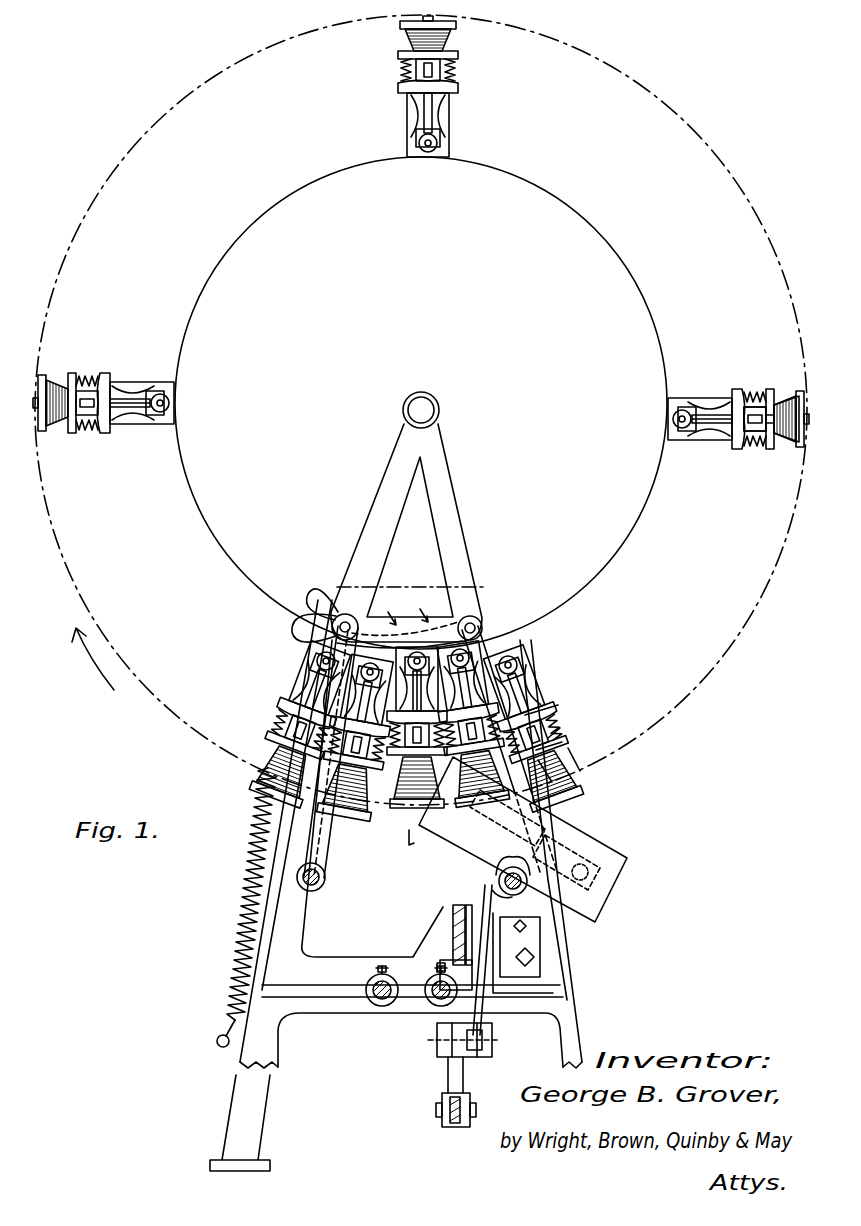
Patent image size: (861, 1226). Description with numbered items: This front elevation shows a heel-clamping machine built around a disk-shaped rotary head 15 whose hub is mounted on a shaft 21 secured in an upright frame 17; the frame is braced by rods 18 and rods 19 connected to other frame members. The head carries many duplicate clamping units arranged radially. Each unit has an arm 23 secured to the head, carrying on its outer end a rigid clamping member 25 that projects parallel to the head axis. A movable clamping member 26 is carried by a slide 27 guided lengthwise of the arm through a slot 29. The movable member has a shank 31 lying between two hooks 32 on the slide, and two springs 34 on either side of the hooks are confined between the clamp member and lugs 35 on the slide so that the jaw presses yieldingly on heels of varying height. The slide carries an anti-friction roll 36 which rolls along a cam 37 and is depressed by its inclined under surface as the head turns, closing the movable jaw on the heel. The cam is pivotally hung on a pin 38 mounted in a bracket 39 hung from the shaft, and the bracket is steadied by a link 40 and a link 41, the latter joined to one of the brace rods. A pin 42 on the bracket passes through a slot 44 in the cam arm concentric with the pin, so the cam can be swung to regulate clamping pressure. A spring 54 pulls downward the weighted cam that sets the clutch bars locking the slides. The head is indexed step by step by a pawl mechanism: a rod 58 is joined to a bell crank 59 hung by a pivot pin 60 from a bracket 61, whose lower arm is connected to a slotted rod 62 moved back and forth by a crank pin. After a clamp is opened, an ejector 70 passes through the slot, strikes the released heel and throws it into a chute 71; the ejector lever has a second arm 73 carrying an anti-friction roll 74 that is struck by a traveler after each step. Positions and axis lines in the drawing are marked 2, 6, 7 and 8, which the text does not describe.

The arrow indicating position 2 is at (387, 606).
The arrow indicating position 6 is at (413, 727).
The spindle unit 7 is at (362, 800).
The axis line 8 is at (338, 587).
The rotary head 15 is at (630, 278).
The upright frame 17 is at (556, 970).
The brace rods 18 is at (325, 888).
The brace rods 19 is at (376, 1002).
The shaft 21 is at (440, 409).
The arm 23 is at (143, 420).
The rigid clamping member 25 is at (798, 448).
The movable clamping member 26 is at (552, 756).
The slide 27 is at (136, 398).
The slot 29 is at (408, 798).
The shank 31 is at (748, 432).
The hooks 32 is at (768, 440).
The springs 34 is at (452, 70).
The lugs 35 is at (540, 718).
The anti-friction roll 36 is at (428, 152).
The cam 37 is at (392, 655).
The pin 38 is at (482, 628).
The bracket 39 is at (466, 537).
The link 40 is at (570, 822).
The link 41 is at (320, 808).
The pin 42 is at (341, 614).
The slot 44 is at (320, 618).
The spring 54 is at (237, 960).
The rod 58 is at (490, 1005).
The bell crank 59 is at (450, 1080).
The pivot pin 60 is at (440, 1052).
The bracket 61 is at (486, 1044).
The rod 62 is at (452, 1128).
The ejector 70 is at (498, 883).
The chute 71 is at (612, 884).
The second arm 73 is at (455, 930).
The anti-friction roll 74 is at (470, 975).